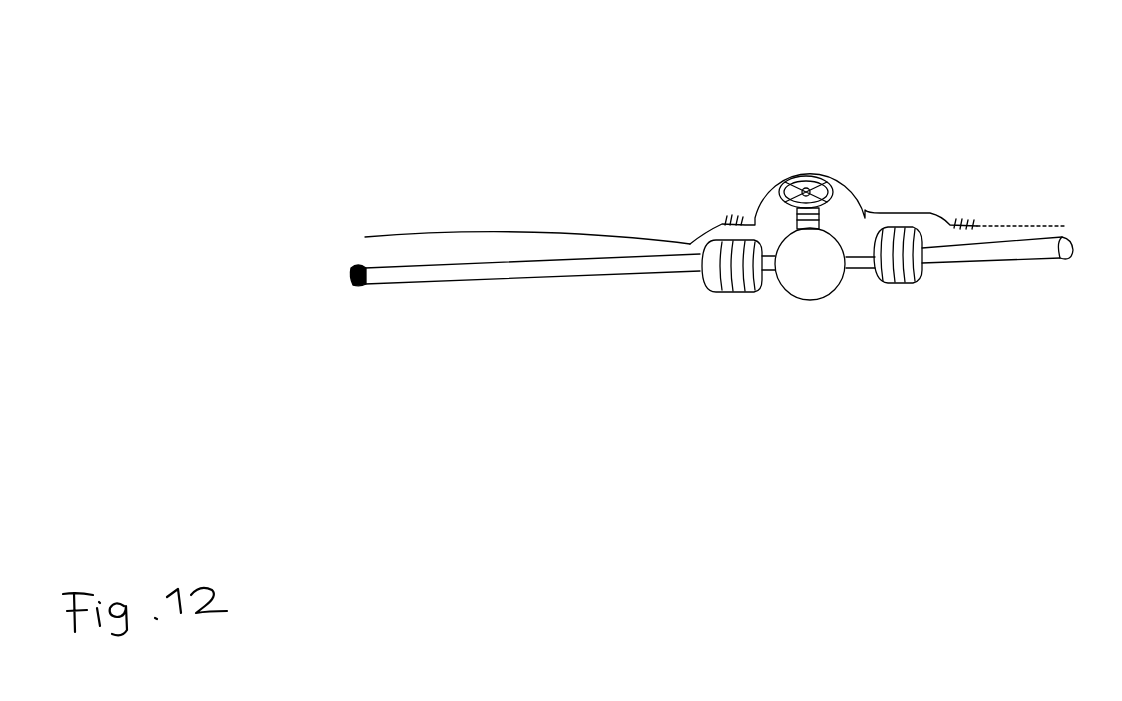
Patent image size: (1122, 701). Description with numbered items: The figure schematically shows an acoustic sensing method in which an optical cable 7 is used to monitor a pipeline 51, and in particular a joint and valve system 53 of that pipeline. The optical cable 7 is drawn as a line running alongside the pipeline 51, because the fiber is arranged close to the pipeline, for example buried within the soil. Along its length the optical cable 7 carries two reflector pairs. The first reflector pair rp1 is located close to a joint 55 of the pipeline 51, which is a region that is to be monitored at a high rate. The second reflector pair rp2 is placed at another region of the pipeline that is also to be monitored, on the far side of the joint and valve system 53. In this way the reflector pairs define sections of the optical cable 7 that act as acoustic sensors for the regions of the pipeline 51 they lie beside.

The optical cable 7 is at (473, 75).
The pipeline 51 is at (634, 417).
The joint and valve system 53 is at (933, 369).
The joint 55 is at (745, 362).
The reflector pair rp1 is at (782, 52).
The second reflector pair rp2 is at (942, 57).